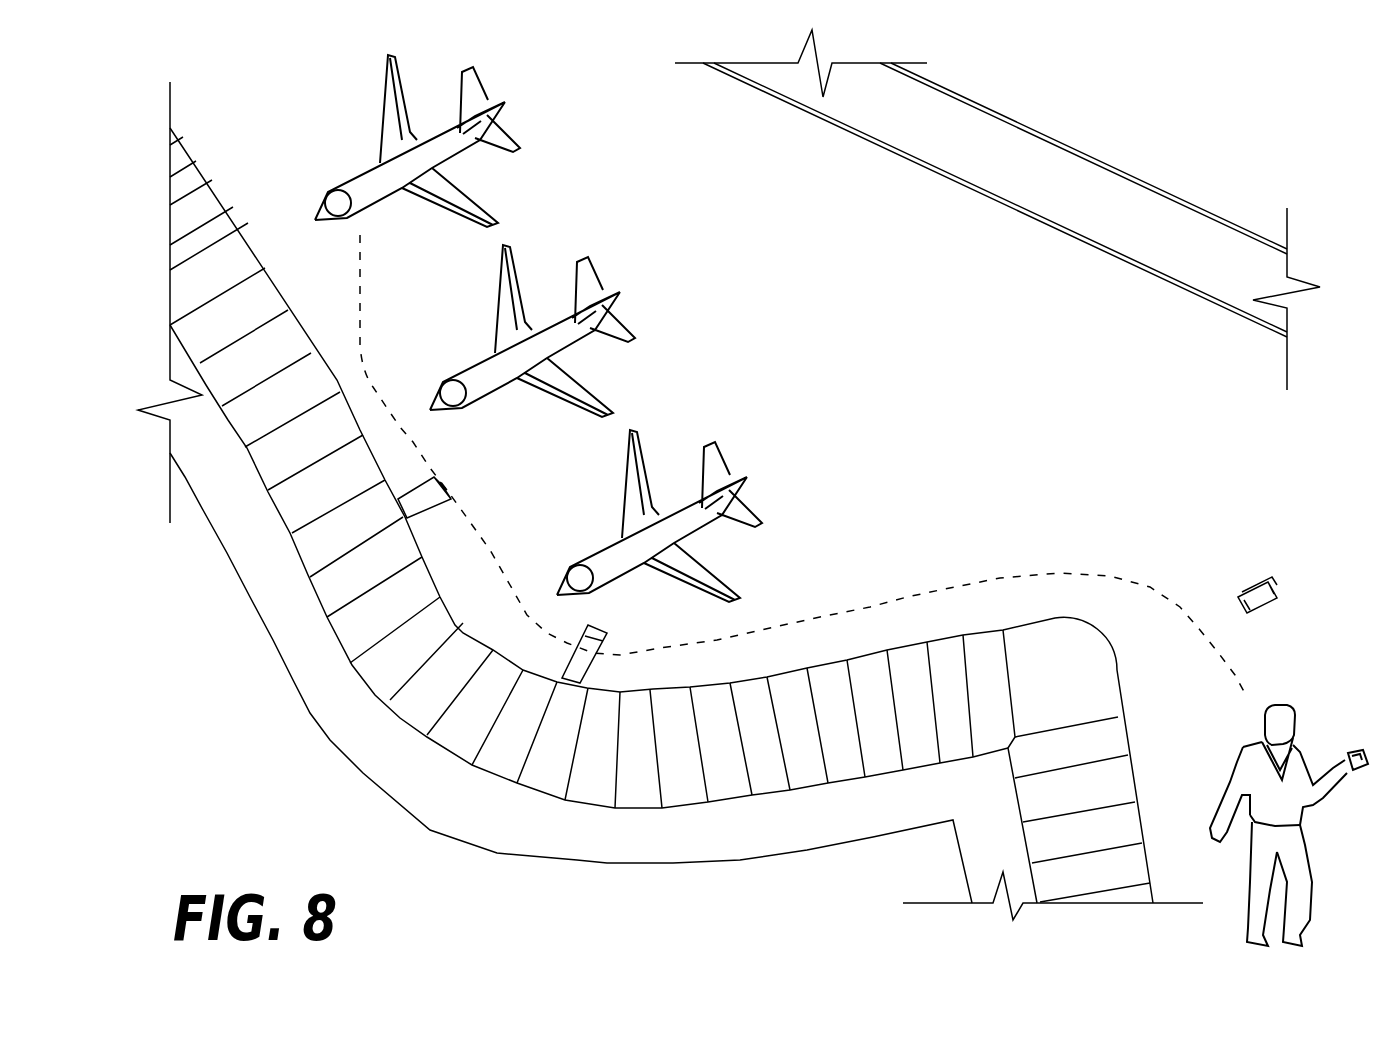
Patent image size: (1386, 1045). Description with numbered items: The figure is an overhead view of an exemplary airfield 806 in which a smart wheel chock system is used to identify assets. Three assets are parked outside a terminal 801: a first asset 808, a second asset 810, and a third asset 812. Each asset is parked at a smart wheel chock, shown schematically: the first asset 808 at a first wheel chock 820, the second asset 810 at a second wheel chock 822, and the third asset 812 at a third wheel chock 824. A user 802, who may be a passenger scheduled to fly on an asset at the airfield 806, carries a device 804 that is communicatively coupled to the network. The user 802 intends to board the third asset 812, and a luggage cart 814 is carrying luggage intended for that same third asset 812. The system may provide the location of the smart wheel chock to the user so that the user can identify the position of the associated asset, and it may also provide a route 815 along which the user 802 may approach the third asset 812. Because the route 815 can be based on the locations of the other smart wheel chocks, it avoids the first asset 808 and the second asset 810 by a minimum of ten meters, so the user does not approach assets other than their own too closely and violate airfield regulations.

The terminal 801 is at (237, 768).
The user 802 is at (1300, 752).
The device 804 is at (1354, 772).
The airfield 806 is at (813, 257).
The first asset 808 is at (718, 465).
The second asset 810 is at (592, 272).
The third asset 812 is at (475, 90).
The luggage cart 814 is at (1268, 582).
The route 815 is at (907, 590).
The first wheel chock 820 is at (584, 585).
The second wheel chock 822 is at (455, 397).
The third wheel chock 824 is at (346, 207).